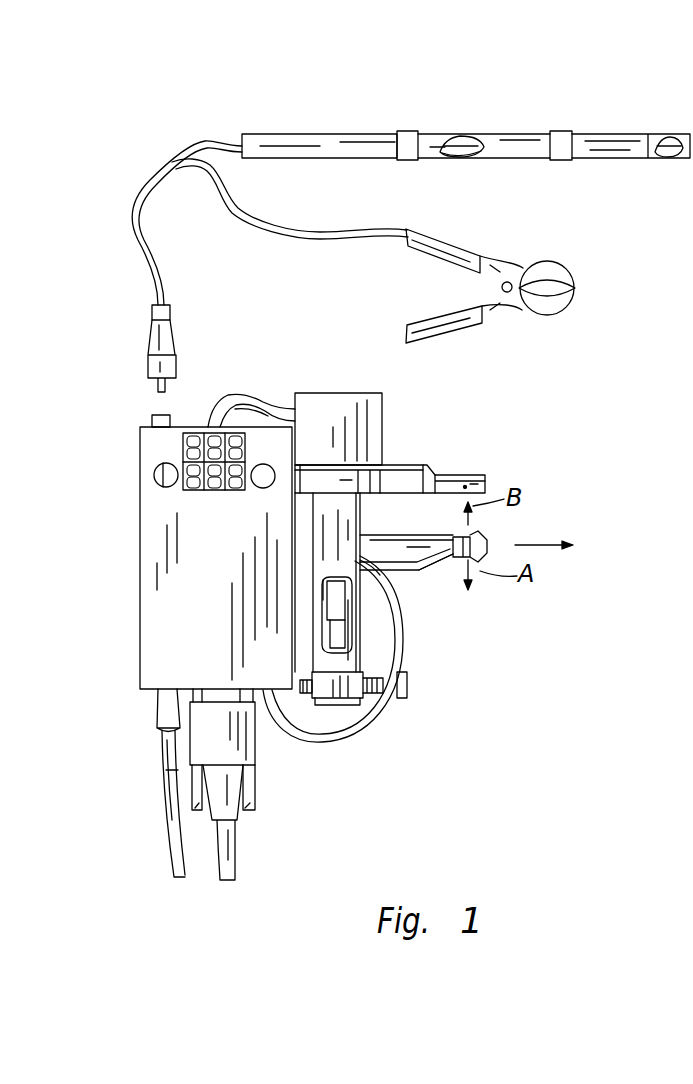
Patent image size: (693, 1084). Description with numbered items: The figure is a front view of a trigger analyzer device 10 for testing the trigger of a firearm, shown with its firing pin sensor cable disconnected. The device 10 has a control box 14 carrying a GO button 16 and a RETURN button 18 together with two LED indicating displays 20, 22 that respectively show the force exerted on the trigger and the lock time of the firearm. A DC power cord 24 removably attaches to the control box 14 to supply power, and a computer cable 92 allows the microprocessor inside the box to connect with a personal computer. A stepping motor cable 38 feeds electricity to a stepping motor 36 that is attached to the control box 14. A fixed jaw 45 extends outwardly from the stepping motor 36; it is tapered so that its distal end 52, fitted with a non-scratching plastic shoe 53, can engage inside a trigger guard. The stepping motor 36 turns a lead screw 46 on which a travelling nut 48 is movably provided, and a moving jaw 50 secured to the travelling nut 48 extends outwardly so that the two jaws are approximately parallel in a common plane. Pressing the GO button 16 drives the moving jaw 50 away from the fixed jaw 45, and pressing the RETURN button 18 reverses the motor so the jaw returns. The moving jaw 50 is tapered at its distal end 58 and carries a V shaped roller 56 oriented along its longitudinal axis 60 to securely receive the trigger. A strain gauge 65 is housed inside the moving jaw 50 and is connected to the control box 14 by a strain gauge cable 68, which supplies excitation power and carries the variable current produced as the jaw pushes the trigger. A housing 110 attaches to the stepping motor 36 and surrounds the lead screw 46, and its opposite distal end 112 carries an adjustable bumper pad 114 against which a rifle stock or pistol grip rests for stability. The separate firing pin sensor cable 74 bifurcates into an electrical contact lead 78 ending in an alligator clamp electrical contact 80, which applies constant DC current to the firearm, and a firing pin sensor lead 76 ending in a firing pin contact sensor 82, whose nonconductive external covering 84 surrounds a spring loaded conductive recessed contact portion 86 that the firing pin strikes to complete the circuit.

The trigger analyzer device 10 is at (513, 693).
The control box 14 is at (140, 638).
The GO button 16 is at (253, 486).
The RETURN button 18 is at (153, 480).
The LED indicating display 20 is at (183, 450).
The LED indicating display 22 is at (193, 487).
The DC power cord 24 is at (165, 793).
The stepping motor 36 is at (383, 418).
The stepping motor cable 38 is at (230, 395).
The fixed jaw 45 is at (403, 465).
The lead screw 46 is at (347, 638).
The travelling nut 48 is at (347, 610).
The moving jaw 50 is at (370, 533).
The distal end 52 is at (485, 487).
The non-scratching shoe 53 is at (470, 473).
The V shaped roller 56 is at (462, 533).
The distal end 58 is at (425, 571).
The longitudinal axis 60 is at (537, 542).
The strain gauge 65 is at (378, 556).
The strain gauge cable 68 is at (360, 725).
The firing pin sensor cable 74 is at (163, 262).
The firing pin sensor lead 76 is at (210, 137).
The electrical contact lead 78 is at (298, 237).
The electrical contact 80 is at (567, 309).
The firing pin contact sensor 82 is at (446, 136).
The nonconductive external covering 84 is at (478, 160).
The conductive recessed contact portion 86 is at (668, 137).
The computer cable 92 is at (233, 853).
The housing 110 is at (360, 658).
The distal end 112 is at (327, 706).
The adjustable bumper pad 114 is at (403, 698).